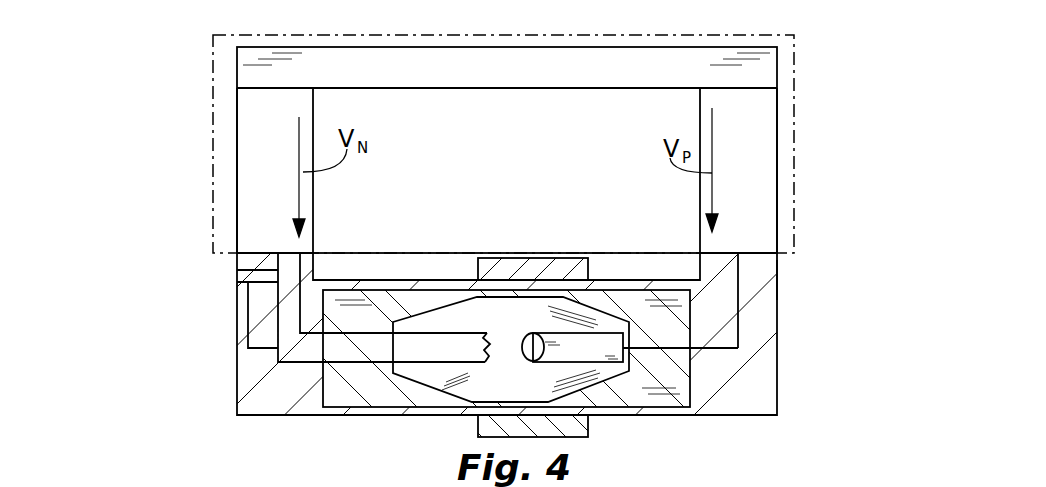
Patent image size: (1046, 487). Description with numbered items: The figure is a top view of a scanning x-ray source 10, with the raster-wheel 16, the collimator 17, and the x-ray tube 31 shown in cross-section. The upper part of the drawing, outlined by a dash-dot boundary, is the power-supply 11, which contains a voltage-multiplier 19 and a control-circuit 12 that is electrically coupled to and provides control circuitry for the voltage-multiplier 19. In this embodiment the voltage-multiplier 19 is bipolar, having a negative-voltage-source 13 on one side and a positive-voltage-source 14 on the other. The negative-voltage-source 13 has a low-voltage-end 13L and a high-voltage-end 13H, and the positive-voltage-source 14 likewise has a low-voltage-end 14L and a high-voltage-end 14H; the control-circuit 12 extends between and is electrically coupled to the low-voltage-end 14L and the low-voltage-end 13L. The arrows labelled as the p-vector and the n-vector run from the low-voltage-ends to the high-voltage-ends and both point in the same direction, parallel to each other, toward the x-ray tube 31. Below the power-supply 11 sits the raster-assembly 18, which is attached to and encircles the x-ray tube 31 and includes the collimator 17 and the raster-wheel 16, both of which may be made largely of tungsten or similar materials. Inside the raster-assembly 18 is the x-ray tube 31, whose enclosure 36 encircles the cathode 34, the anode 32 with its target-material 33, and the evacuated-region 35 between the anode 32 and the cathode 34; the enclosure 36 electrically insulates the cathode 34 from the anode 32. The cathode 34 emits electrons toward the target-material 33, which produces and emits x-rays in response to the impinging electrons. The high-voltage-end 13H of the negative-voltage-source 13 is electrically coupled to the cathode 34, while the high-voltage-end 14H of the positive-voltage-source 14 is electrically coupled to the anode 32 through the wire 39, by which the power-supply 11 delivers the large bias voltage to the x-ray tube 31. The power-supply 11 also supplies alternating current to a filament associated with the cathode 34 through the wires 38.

The scanning x-ray source 10 is at (136, 41).
The power-supply 11 is at (795, 88).
The control-circuit 12 is at (518, 81).
The negative-voltage-source 13 is at (274, 176).
The low-voltage-end 13L is at (247, 92).
The high-voltage-end 13H is at (263, 238).
The positive-voltage-source 14 is at (761, 176).
The low-voltage-end 14L is at (735, 92).
The high-voltage-end 14H is at (750, 238).
The raster-wheel 16 is at (553, 258).
The collimator 17 is at (284, 399).
The raster-assembly 18 is at (814, 280).
The voltage-multiplier 19 is at (252, 195).
The x-ray tube 31 is at (725, 379).
The anode 32 is at (595, 360).
The target-material 33 is at (522, 343).
The cathode 34 is at (483, 348).
The evacuated-region 35 is at (505, 350).
The enclosure 36 is at (367, 399).
The wires 38 is at (237, 282).
The wire 39 is at (248, 342).